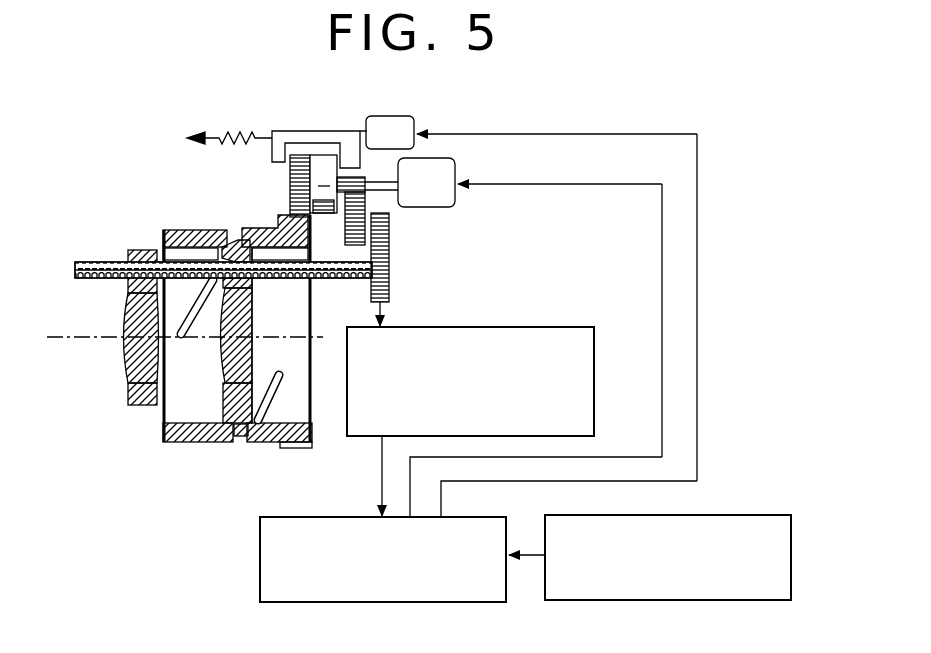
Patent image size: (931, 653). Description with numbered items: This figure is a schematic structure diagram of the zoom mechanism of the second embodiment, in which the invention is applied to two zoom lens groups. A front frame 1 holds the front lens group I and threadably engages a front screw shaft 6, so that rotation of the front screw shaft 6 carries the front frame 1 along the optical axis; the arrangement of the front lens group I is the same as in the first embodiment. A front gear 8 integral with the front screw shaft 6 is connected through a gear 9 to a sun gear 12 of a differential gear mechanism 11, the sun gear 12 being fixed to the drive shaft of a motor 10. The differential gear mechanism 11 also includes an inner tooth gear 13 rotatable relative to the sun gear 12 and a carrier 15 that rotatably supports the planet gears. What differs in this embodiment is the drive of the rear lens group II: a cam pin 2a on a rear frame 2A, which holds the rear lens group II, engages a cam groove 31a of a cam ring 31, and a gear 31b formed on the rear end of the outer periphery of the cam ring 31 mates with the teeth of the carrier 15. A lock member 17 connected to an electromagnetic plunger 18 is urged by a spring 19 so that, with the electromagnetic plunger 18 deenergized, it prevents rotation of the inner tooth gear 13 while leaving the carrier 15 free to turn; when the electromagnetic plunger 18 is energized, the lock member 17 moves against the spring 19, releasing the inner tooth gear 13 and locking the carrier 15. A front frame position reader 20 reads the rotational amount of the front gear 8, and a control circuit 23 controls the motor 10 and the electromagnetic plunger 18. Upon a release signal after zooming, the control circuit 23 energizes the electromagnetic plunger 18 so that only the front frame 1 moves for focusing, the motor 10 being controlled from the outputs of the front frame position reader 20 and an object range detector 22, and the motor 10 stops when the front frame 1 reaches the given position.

The front frame 1 is at (127, 390).
The front lens group I is at (130, 345).
The rear lens group II is at (228, 372).
The rear frame 2A is at (222, 430).
The cam pin 2a is at (235, 238).
The cam ring 31 is at (305, 282).
The cam groove 31a is at (205, 300).
The gear 31b is at (296, 450).
The front screw shaft 6 is at (97, 262).
The front gear 8 is at (390, 265).
The gear 9 is at (385, 222).
The motor 10 is at (440, 178).
The differential gear mechanism 11 is at (283, 196).
The sun gear 12 is at (360, 178).
The inner tooth gear 13 is at (330, 214).
The carrier 15 is at (290, 185).
The lock member 17 is at (313, 136).
The electromagnetic plunger 18 is at (405, 122).
The spring 19 is at (241, 134).
The front frame position reader 20 is at (560, 330).
The object range detector 22 is at (732, 522).
The control circuit 23 is at (276, 545).